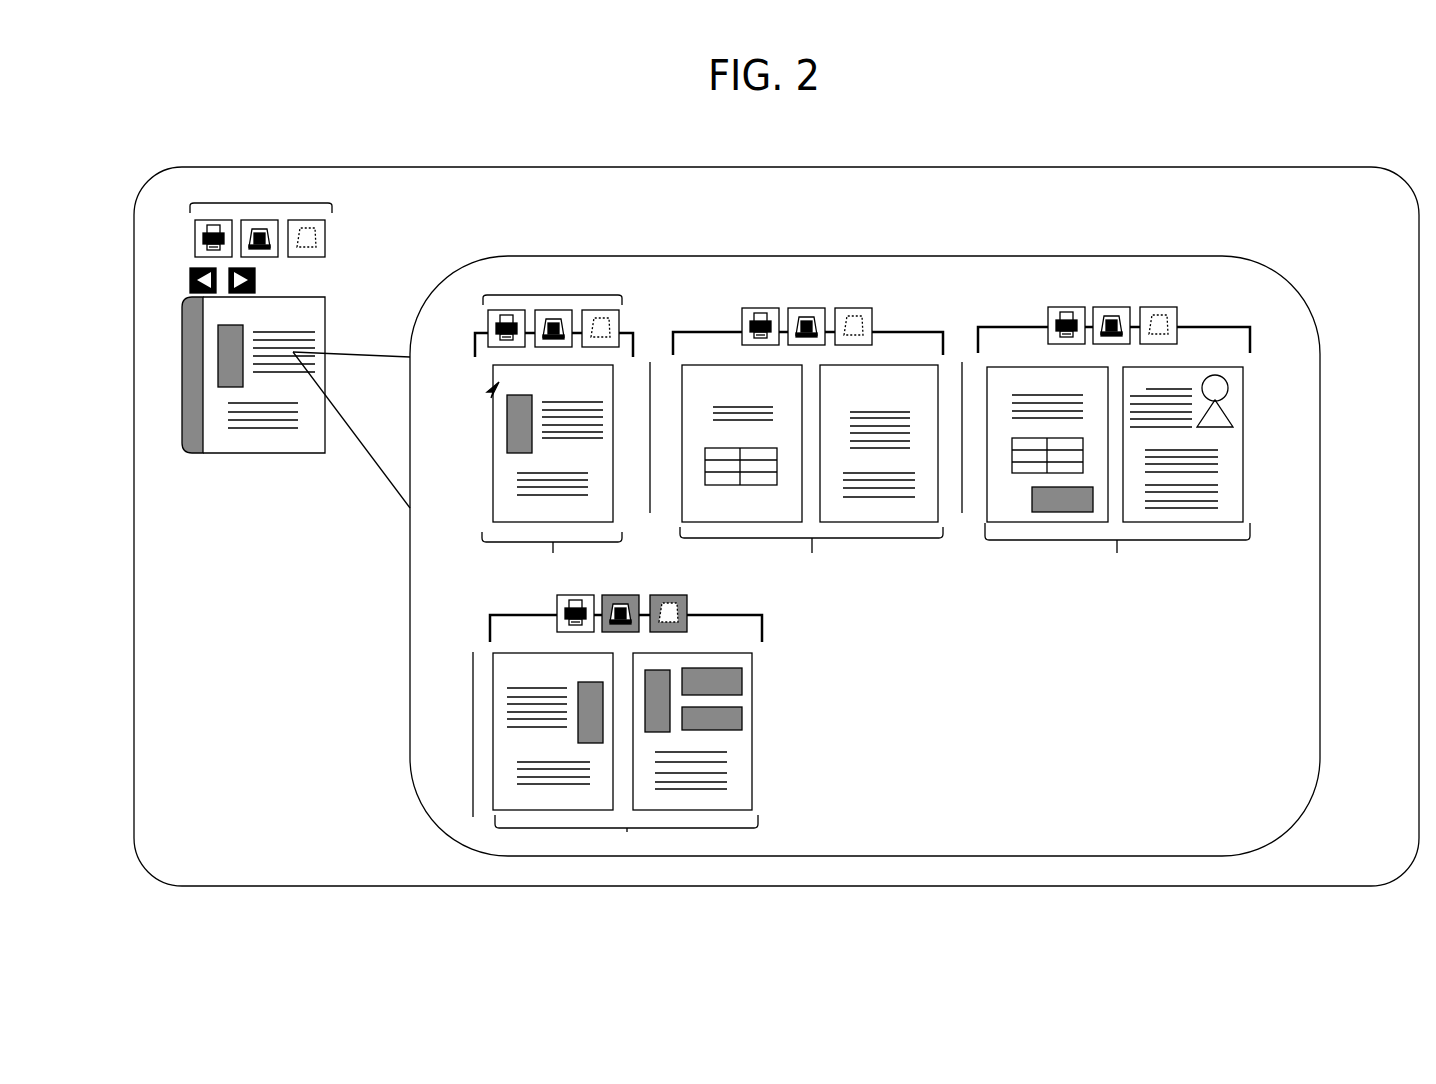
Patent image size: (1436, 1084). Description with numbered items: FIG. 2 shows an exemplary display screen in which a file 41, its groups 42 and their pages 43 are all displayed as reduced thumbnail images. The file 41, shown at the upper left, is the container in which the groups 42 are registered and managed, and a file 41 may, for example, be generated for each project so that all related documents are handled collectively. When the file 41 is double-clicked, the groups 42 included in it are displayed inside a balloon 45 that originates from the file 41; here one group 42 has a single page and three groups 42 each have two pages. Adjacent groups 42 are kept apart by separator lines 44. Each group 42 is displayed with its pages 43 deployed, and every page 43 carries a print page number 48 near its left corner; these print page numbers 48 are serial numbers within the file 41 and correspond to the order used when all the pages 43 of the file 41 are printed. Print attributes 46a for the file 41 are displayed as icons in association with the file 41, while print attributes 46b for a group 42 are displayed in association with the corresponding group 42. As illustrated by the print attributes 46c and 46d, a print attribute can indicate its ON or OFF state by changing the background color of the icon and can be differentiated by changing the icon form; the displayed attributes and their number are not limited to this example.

The file 41 is at (188, 370).
The group 42 is at (553, 553).
The page 43 is at (502, 488).
The separator line 44 is at (650, 513).
The balloon 45 is at (1005, 256).
The print attributes for the file 46a is at (260, 203).
The print attributes for a group 46b is at (552, 295).
The print attribute 46c is at (1168, 318).
The print attribute 46d is at (677, 595).
The print page number 48 is at (495, 385).